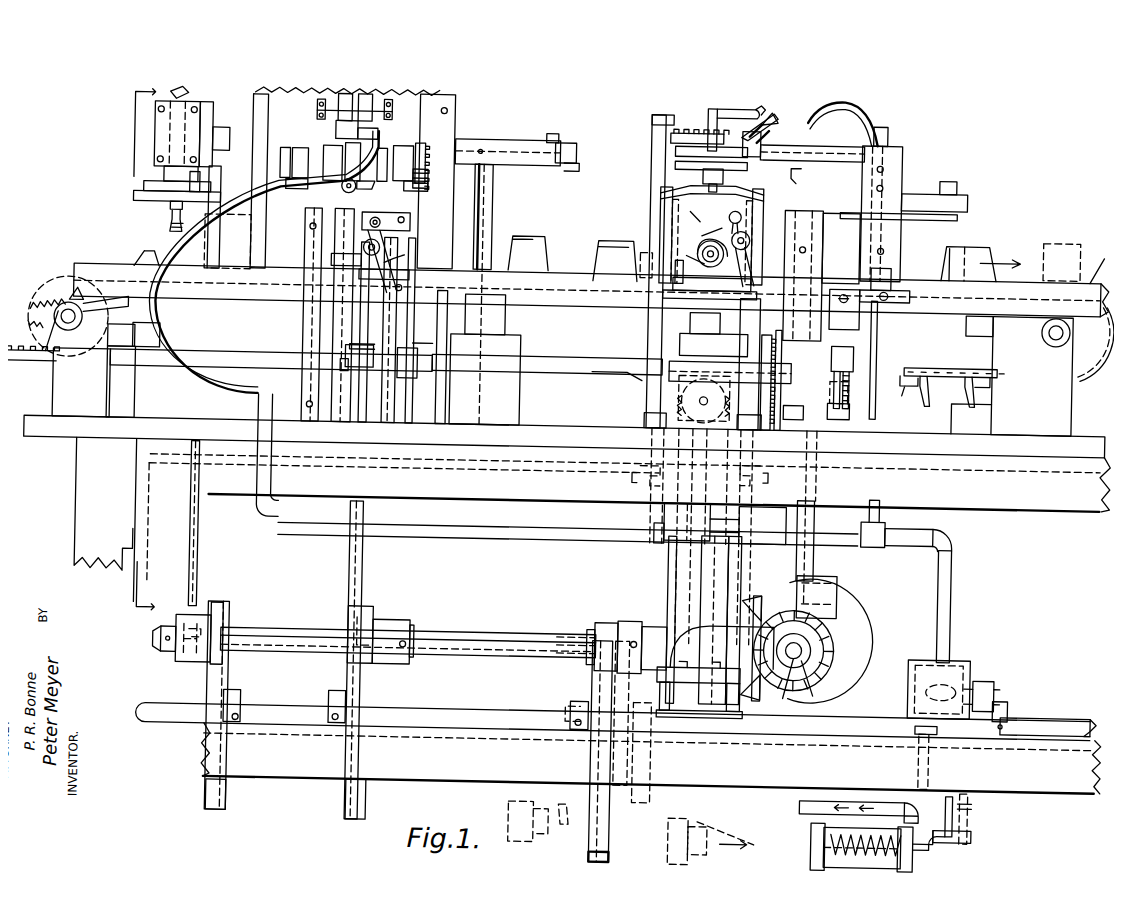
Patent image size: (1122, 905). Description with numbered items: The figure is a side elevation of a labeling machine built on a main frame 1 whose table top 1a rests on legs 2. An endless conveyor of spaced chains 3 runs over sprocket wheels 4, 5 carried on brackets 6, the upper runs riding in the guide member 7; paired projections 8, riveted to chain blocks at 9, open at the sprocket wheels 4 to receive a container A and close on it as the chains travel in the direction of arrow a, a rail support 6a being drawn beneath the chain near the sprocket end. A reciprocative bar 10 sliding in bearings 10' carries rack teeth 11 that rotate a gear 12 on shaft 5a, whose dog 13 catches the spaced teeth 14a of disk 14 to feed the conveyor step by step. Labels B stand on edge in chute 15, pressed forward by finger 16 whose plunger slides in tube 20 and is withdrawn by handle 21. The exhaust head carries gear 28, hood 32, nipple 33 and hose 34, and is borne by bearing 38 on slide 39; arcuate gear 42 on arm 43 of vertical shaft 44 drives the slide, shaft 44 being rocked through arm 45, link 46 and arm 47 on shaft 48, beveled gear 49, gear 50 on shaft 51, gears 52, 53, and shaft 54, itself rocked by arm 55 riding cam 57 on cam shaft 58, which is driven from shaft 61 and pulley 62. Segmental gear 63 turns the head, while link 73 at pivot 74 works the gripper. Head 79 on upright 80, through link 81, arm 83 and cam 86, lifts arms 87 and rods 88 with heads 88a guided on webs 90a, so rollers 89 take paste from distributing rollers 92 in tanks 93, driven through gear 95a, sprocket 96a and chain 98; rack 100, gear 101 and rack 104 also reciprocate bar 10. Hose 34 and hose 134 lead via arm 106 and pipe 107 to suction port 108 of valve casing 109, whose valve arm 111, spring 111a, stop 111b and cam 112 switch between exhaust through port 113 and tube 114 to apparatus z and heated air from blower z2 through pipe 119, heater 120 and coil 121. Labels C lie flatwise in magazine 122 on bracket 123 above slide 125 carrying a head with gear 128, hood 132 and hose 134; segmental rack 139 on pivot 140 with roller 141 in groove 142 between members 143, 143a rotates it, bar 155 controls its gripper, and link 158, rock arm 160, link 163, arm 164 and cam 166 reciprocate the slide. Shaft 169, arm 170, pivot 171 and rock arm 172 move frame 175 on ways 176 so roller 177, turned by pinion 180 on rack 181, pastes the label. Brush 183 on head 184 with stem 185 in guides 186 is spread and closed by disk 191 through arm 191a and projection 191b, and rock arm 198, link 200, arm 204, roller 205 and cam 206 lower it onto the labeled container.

The main frame 1 is at (88, 480).
The table top 1a is at (550, 430).
The legs 2 is at (104, 503).
The conveyor chains 3 is at (935, 368).
The sprocket wheels 4 is at (608, 365).
The sprocket wheels 5 is at (58, 321).
The shaft 5a is at (53, 380).
The uprights or brackets 6 is at (562, 367).
The rail support 6a is at (896, 382).
The guide member 7 is at (559, 304).
The projections 8 is at (970, 391).
The riveting blocks 9 is at (920, 388).
The reciprocative bar 10 is at (271, 350).
The bearings 10' is at (547, 354).
The rack teeth 11 is at (10, 351).
The gear 12 is at (28, 297).
The dog 13 is at (80, 287).
The wheel or disk 14 is at (110, 317).
The spaced teeth 14a is at (126, 342).
The chute or trough 15 is at (708, 273).
The finger or pusher 16 is at (712, 253).
The guiding tube or casing 20 is at (738, 235).
The handle or finger piece 21 is at (733, 208).
The gear 28 is at (742, 128).
The hollow hood 32 is at (701, 107).
The nipple 33 is at (722, 102).
The air hose 34 is at (765, 114).
The bearing 38 is at (713, 180).
The slide member 39 is at (669, 154).
The arcuate gear 42 is at (755, 147).
The arm 43 is at (815, 154).
The vertical shaft 44 is at (884, 142).
The arm 45 is at (916, 191).
The link 46 is at (908, 212).
The arm 47 is at (807, 220).
The shaft 48 is at (815, 516).
The beveled gear 49 is at (845, 610).
The gear 50 is at (845, 658).
The shaft 51 is at (797, 678).
The gear 52 is at (830, 673).
The gear 53 is at (755, 595).
The shaft 54 is at (514, 642).
The arm 55 is at (617, 624).
The cam 57 is at (572, 807).
The shaft 58 is at (494, 708).
The shaft 61 is at (1070, 714).
The drive pulley 62 is at (655, 110).
The segmental gear 63 is at (664, 133).
The link 73 is at (699, 245).
The pivot 74 is at (690, 212).
The reciprocative head 79 is at (667, 519).
The upright 80 is at (709, 619).
The depending link 81 is at (670, 568).
The arm 83 is at (640, 623).
The cam 86 is at (643, 804).
The arms 87 is at (655, 486).
The rods or bars 88 is at (754, 317).
The blocks or heads 88a is at (580, 245).
The rollers 89 is at (671, 258).
The lateral guides or webs 90a is at (652, 194).
The adhesive distributing rollers 92 is at (770, 330).
The tanks 93 is at (730, 338).
The gear 95a is at (782, 418).
The sprocket wheel 96a is at (830, 352).
The endless chain 98 is at (832, 416).
The rack 100 is at (680, 325).
The gear 101 is at (660, 427).
The rack 104 is at (600, 352).
The arm 106 is at (795, 170).
The pipe 107 is at (263, 526).
The air inlet or suction port 108 is at (930, 685).
The valve casing 109 is at (972, 655).
The arm 111 is at (996, 690).
The spring 111a is at (986, 797).
The stop 111b is at (983, 829).
The cam 112 is at (1017, 706).
The air outlet port 113 is at (920, 726).
The tube 114 is at (898, 806).
The pipe 119 is at (954, 820).
The air heating device 120 is at (815, 825).
The electric heating coil 121 is at (920, 853).
The magazine 122 is at (310, 111).
The bracket 123 is at (460, 105).
The slide member 125 is at (344, 315).
The gear 128 is at (303, 215).
The hollow hood 132 is at (343, 202).
The air hose 134 is at (156, 334).
The segmental rack 139 is at (357, 208).
The pivot 140 is at (378, 223).
The projection or roller 141 is at (377, 252).
The cam-like groove 142 is at (400, 269).
The groove member 143 is at (362, 312).
The groove member 143a is at (395, 273).
The bar 155 is at (366, 162).
The link 158 is at (336, 348).
The rock arm 160 is at (398, 345).
The depending link 163 is at (364, 586).
The rock arm 164 is at (388, 631).
The cam 166 is at (350, 810).
The upright shaft 169 is at (495, 218).
The arm 170 is at (514, 143).
The pivot 171 is at (555, 142).
The rock arm 172 is at (553, 172).
The slidable frame 175 is at (286, 152).
The ways 176 is at (272, 193).
The adhesive applying roller 177 is at (334, 162).
The pinion 180 is at (424, 152).
The rack 181 is at (425, 181).
The brush 183 is at (162, 227).
The reciprocative head 184 is at (157, 185).
The stem or rod 185 is at (163, 105).
The guides 186 is at (155, 137).
The member or disk 191 is at (130, 198).
The arm 191a is at (222, 182).
The projection 191b is at (234, 225).
The rock arm 198 is at (219, 110).
The link 200 is at (199, 565).
The arm 204 is at (188, 668).
The projection or roller 205 is at (229, 604).
The cam 206 is at (234, 797).
The containers A is at (161, 254).
The labels B is at (940, 239).
The labels C is at (374, 154).
The arrow a is at (1000, 255).
The exhaust apparatus z is at (527, 830).
The pressure apparatus or blower z2 is at (673, 862).